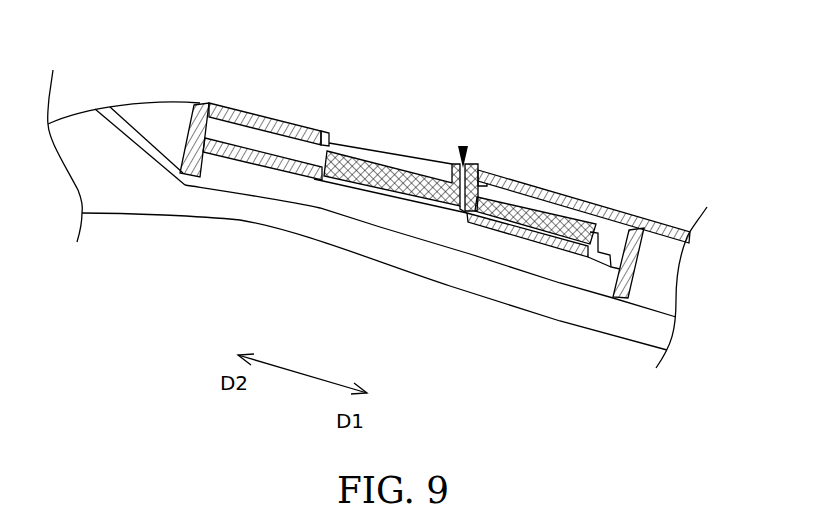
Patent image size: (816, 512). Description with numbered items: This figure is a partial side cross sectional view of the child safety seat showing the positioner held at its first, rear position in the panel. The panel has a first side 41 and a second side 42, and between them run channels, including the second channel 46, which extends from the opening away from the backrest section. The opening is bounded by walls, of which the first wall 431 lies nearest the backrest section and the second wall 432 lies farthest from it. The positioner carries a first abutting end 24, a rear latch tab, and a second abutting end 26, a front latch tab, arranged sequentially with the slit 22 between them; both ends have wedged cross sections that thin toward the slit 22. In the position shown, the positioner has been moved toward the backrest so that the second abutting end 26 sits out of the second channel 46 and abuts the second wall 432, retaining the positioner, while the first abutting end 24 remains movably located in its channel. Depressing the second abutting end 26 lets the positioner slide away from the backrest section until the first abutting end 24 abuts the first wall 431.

The slit 22 is at (466, 146).
The first abutting end 24 is at (560, 247).
The second abutting end 26 is at (351, 170).
The first side 41 is at (577, 199).
The second side 42 is at (515, 245).
The first wall 431 is at (497, 176).
The second wall 432 is at (332, 143).
The second channel 46 is at (229, 134).